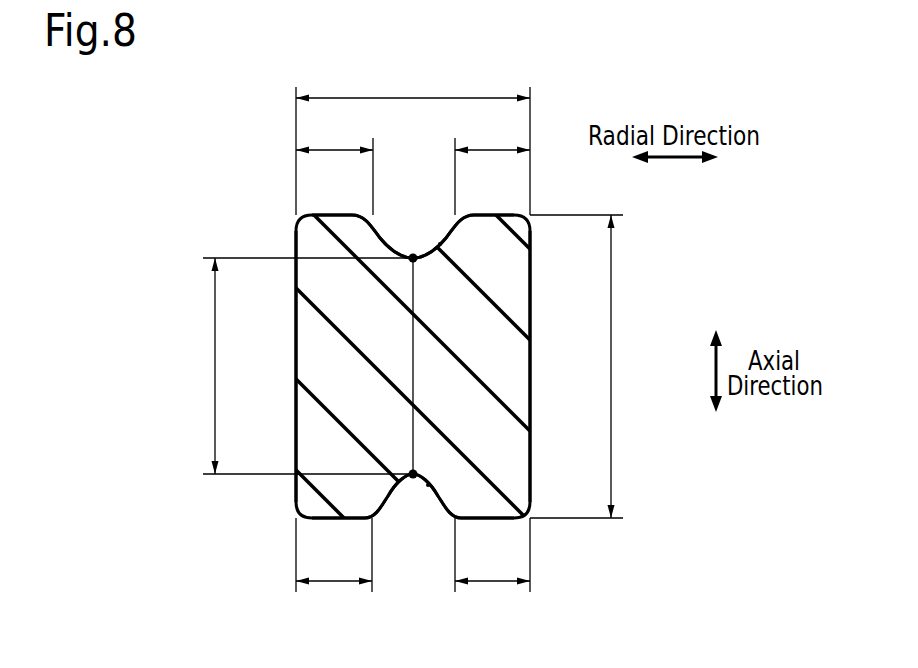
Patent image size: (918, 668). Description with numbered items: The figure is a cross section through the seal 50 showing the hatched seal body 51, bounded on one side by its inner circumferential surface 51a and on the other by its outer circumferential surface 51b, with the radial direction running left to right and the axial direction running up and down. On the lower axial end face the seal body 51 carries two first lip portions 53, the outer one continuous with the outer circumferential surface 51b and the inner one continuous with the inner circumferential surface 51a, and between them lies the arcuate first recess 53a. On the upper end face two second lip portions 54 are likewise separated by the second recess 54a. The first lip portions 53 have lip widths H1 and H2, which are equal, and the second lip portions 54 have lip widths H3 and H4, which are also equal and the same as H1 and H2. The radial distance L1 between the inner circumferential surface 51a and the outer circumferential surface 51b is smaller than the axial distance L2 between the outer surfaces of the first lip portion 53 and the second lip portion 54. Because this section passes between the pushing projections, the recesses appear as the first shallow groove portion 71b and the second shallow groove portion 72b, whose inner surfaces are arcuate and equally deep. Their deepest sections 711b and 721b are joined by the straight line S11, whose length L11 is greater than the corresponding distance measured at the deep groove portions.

The magnet piece 50 is at (234, 160).
The seal body 51 is at (298, 432).
The inner circumferential surface 51a is at (530, 302).
The outer circumferential surface 51b is at (296, 306).
The first lip portions 53 is at (334, 520).
The first recess 53a is at (387, 488).
The second lip portions 54 is at (333, 214).
The second recess 54a is at (384, 244).
The first shallow groove portion 71b is at (428, 484).
The deepest section of the first shallow groove portion 711b is at (413, 477).
The second shallow groove portion 72b is at (441, 243).
The deepest section of the second shallow groove portion 721b is at (415, 255).
The straight line S11 is at (414, 372).
The distance in the radial direction L1 is at (413, 97).
The distance in the axial direction L2 is at (611, 368).
The distance of the straight line S11 L11 is at (215, 363).
The lip width H1 is at (334, 584).
The lip width H2 is at (488, 584).
The lip width H3 is at (334, 148).
The lip width H4 is at (488, 148).